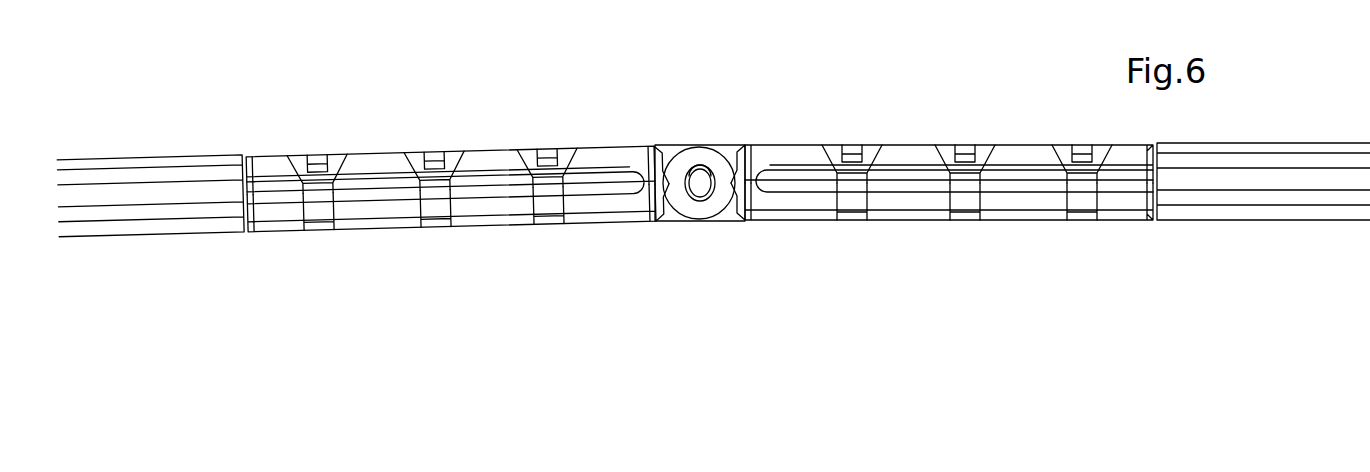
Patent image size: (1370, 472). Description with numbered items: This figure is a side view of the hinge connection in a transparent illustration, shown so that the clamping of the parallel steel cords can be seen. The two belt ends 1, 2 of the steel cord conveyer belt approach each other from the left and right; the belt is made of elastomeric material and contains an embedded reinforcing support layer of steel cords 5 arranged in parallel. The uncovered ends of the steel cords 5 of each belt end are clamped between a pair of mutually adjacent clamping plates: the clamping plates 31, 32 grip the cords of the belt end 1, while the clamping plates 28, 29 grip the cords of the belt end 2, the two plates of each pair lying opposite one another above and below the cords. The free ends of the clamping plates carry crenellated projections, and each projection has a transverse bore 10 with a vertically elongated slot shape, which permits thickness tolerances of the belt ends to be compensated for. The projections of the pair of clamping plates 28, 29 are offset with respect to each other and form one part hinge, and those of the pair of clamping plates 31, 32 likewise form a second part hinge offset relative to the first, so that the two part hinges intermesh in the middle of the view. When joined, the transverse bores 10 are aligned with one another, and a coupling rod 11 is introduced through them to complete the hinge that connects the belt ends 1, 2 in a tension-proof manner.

The belt end 1 is at (157, 232).
The belt end 2 is at (1230, 205).
The steel cords 5 is at (487, 183).
The transverse bore 10 is at (703, 172).
The coupling rod 11 is at (703, 193).
The clamping plate 28 is at (908, 148).
The clamping plate 29 is at (1013, 205).
The clamping plate 31 is at (622, 162).
The clamping plate 32 is at (610, 207).